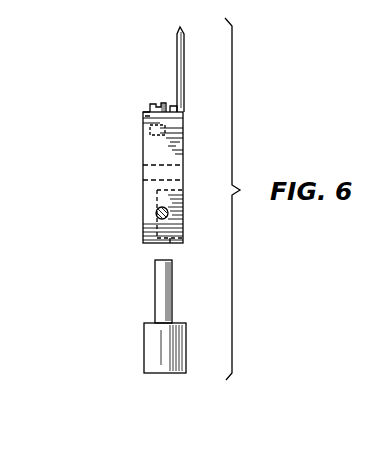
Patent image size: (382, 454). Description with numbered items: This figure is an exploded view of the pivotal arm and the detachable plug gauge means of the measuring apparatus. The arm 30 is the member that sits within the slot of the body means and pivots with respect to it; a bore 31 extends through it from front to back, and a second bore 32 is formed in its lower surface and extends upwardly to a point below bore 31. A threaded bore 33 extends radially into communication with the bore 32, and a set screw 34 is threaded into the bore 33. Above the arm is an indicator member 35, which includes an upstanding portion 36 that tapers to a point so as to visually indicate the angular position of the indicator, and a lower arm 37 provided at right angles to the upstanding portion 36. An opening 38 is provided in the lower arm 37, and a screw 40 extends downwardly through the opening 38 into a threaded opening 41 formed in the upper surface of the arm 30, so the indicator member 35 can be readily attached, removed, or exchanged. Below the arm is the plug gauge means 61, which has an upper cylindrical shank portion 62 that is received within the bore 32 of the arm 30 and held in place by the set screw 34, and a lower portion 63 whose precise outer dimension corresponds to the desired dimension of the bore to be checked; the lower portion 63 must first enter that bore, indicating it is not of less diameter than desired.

The arm 30 is at (180, 150).
The bore 31 is at (177, 189).
The second bore 32 is at (184, 238).
The threaded bore 33 is at (157, 215).
The set screw 34 is at (160, 222).
The indicator member 35 is at (170, 62).
The upstanding portion 36 is at (185, 75).
The lower arm 37 is at (143, 112).
The opening 38 is at (177, 110).
The screw 40 is at (152, 104).
The threaded opening 41 is at (150, 128).
The plug gauge means 61 is at (115, 322).
The upper cylindrical shank portion 62 is at (172, 295).
The lower portion 63 is at (158, 352).